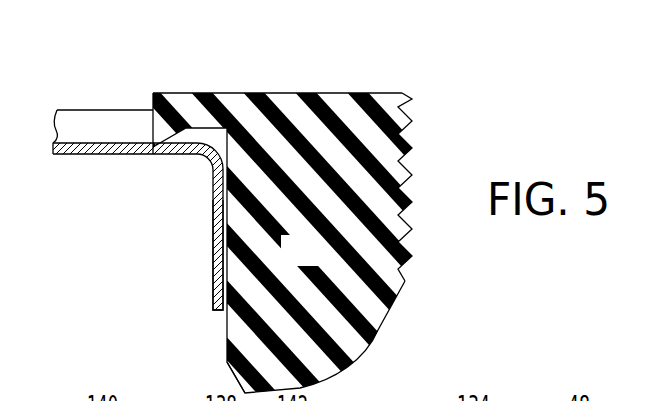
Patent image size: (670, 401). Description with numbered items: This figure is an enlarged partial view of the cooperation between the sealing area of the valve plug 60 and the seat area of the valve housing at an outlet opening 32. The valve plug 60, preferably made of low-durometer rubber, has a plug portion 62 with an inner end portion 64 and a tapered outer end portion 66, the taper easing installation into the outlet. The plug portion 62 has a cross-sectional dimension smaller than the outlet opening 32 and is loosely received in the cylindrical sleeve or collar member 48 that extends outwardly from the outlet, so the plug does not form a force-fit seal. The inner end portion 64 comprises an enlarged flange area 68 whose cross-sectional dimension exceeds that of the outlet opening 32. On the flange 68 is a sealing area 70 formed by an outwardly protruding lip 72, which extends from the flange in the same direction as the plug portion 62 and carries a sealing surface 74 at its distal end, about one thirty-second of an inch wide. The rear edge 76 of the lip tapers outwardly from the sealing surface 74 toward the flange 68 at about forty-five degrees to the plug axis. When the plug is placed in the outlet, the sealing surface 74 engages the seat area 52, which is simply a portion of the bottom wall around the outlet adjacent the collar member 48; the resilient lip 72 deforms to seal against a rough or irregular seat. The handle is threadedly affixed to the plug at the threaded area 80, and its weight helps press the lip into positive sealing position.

The outlet opening 32 is at (210, 330).
The cylindrical sleeve or collar member 48 is at (213, 267).
The seat area 52 is at (158, 155).
The valve plug 60 is at (420, 305).
The plug portion 62 is at (313, 262).
The inner end portion 64 is at (306, 87).
The outer end portion 66 is at (212, 371).
The flange area 68 is at (173, 94).
The sealing area 70 is at (131, 121).
The outwardly protruding lip 72 is at (158, 125).
The sealing surface 74 is at (155, 150).
The rear edge 76 is at (186, 133).
The threaded area 80 is at (409, 153).